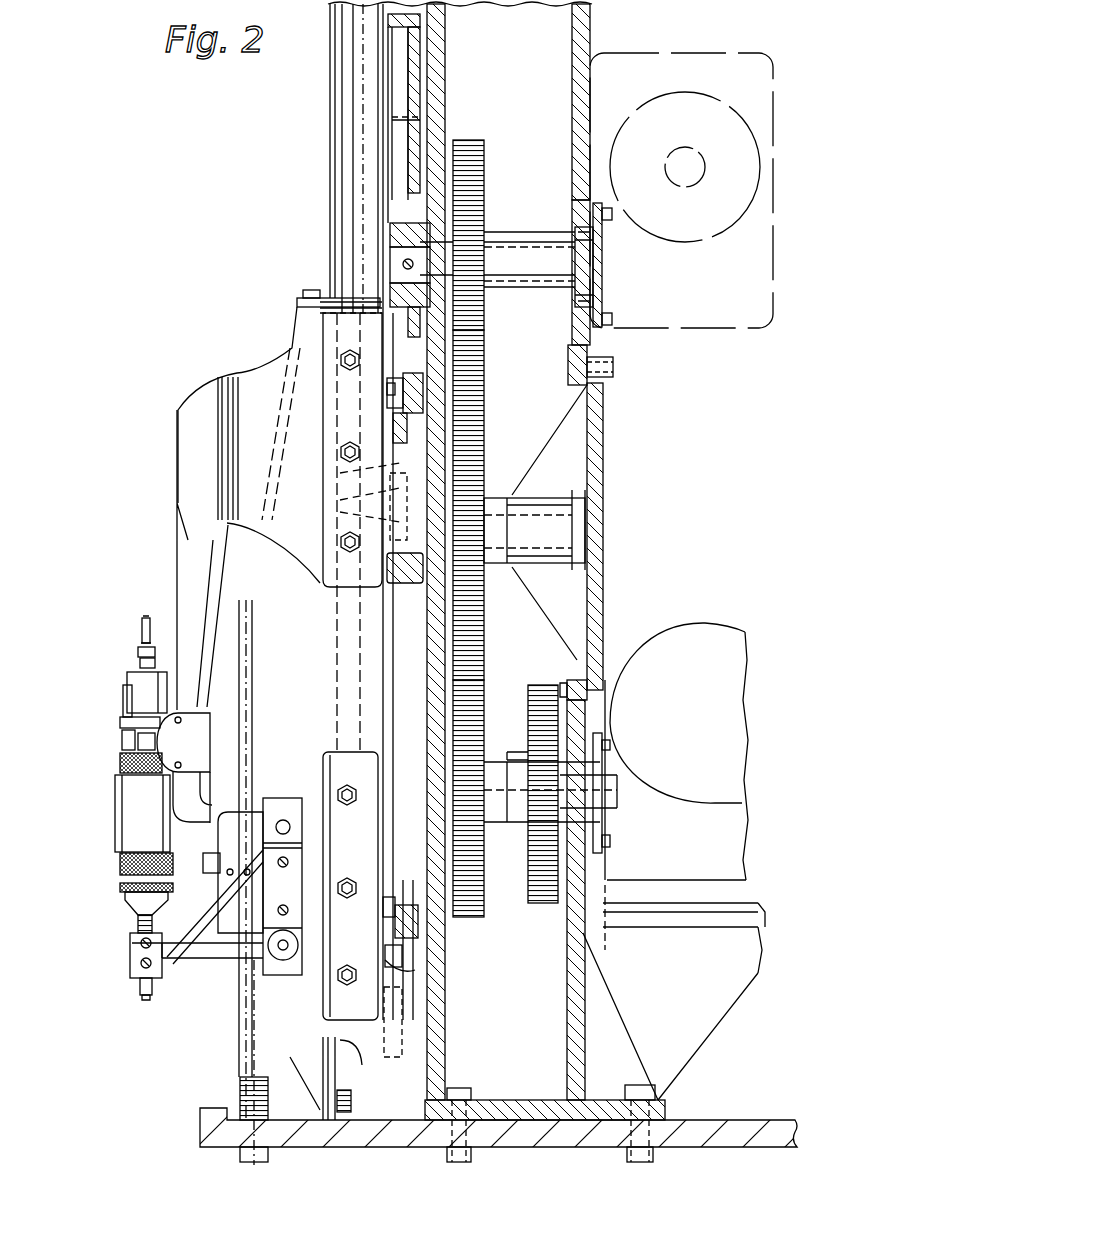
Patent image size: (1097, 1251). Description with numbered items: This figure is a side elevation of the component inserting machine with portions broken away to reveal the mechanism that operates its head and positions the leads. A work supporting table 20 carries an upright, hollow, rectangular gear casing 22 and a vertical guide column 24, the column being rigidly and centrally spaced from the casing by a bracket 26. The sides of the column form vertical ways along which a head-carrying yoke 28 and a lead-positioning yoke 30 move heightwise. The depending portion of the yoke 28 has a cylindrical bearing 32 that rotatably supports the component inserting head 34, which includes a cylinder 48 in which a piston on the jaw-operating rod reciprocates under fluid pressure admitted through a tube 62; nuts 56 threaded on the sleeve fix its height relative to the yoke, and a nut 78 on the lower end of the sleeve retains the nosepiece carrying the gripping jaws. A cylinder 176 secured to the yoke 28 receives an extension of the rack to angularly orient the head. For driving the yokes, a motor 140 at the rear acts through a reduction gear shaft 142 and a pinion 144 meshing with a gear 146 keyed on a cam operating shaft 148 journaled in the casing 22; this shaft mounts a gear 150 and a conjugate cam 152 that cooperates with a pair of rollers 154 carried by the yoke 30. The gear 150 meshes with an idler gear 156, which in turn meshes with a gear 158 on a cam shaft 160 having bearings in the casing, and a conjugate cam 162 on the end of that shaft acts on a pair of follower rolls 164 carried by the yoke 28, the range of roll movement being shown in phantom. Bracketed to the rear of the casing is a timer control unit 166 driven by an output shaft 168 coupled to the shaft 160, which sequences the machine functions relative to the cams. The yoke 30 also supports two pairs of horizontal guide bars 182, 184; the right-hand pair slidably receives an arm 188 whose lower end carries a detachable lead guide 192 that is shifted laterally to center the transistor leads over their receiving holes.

The work supporting table 20 is at (730, 1125).
The gear casing 22 is at (590, 84).
The vertical guide column 24 is at (255, 596).
The bracket 26 is at (300, 298).
The head-carrying yoke 28 is at (262, 362).
The lead-positioning yoke 30 is at (323, 766).
The cylindrical bearing 32 is at (115, 796).
The component inserting head 34 is at (123, 767).
The cylinder 48 is at (132, 672).
The nuts 56 is at (118, 762).
The tube 62 is at (142, 628).
The nut 78 is at (122, 898).
The motor 140 is at (690, 622).
The reduction gear shaft 142 is at (605, 823).
The pinion 144 is at (535, 755).
The gear 146 is at (545, 905).
The cam operating shaft 148 is at (490, 826).
The gear 150 is at (458, 918).
The conjugate cam 152 is at (395, 1000).
The rollers 154 is at (385, 935).
The idler gear 156 is at (484, 592).
The gear 158 is at (476, 142).
The cam shaft 160 is at (527, 234).
The conjugate cam 162 is at (395, 412).
The follower rolls 164 is at (398, 388).
The timer control unit 166 is at (744, 304).
The output shaft 168 is at (590, 252).
The cylinder 176 is at (165, 720).
The horizontal guide bars 182 is at (282, 820).
The horizontal guide bars 184 is at (283, 960).
The arm 188 is at (190, 965).
The lead guide 192 is at (136, 990).